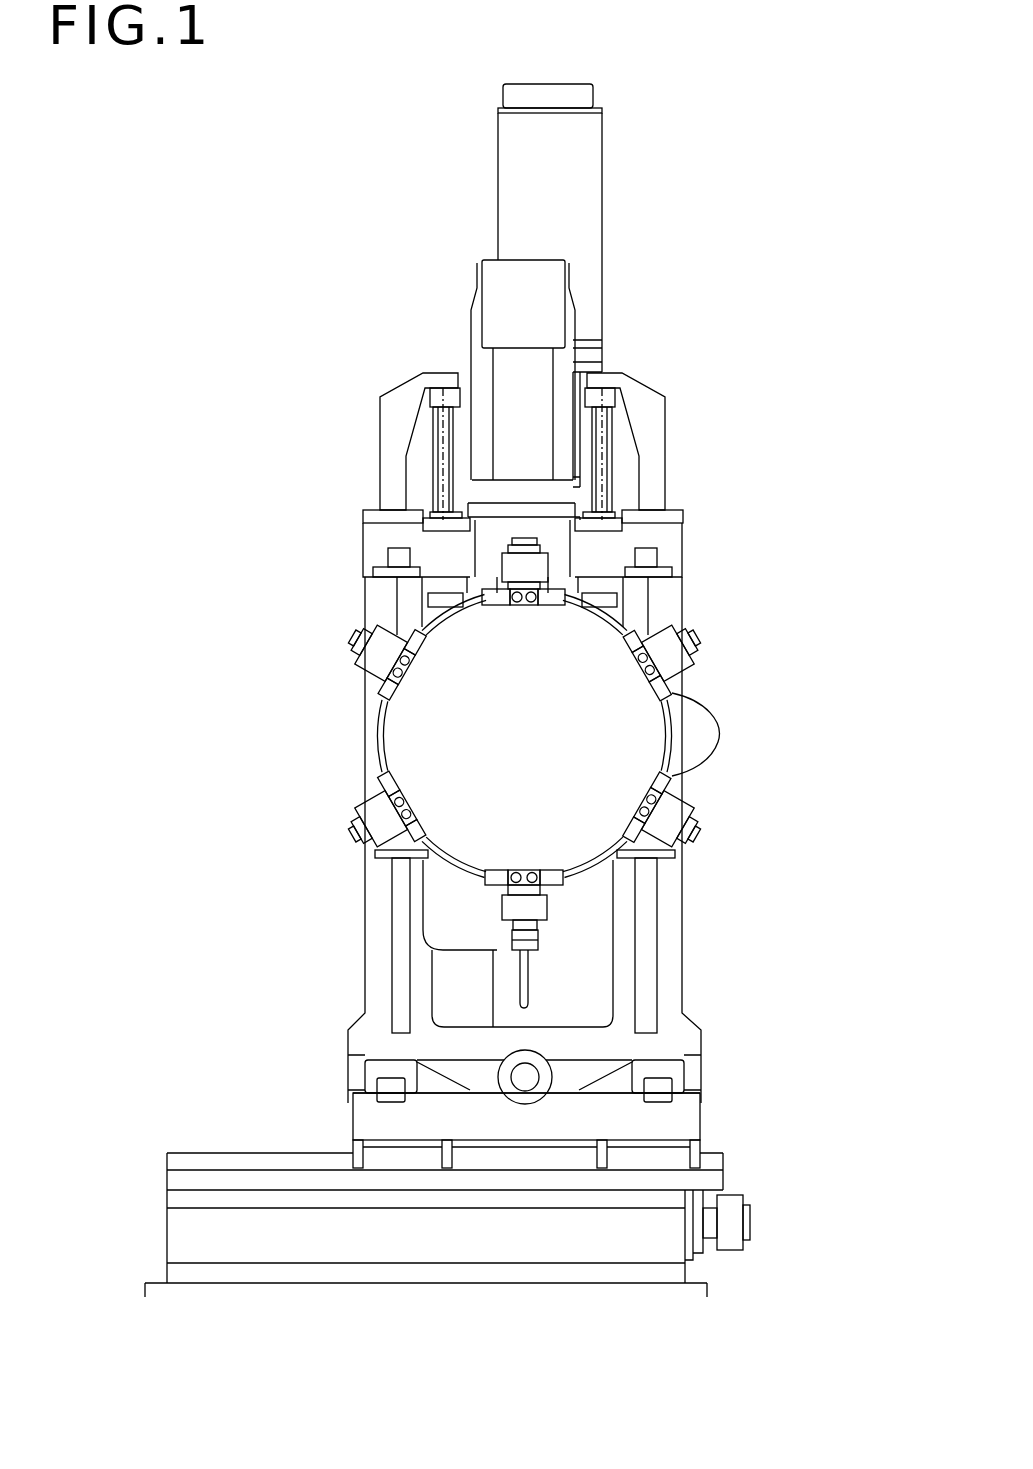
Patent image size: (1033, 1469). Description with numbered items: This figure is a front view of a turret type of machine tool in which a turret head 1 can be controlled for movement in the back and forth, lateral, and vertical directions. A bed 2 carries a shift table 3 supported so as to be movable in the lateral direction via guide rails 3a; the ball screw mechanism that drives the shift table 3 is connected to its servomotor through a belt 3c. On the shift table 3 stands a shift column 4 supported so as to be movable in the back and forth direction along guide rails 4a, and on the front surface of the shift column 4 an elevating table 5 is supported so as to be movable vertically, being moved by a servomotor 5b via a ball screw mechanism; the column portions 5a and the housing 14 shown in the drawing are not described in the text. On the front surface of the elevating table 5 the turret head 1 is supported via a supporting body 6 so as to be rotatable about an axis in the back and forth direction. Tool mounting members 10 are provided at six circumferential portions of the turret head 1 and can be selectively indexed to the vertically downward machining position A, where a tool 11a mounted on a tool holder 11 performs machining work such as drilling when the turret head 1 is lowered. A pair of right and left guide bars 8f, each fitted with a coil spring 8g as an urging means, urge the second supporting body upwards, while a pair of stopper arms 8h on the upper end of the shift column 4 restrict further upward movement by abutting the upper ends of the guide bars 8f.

The turret head 1 is at (425, 740).
The bed 2 is at (183, 1228).
The shift table 3 is at (685, 1117).
The guide rails 3a is at (255, 1155).
The belt 3c is at (738, 1200).
The shift column 4 is at (680, 1003).
The guide rails 4a is at (378, 1085).
The elevating table 5 is at (380, 615).
The columns 5a is at (400, 945).
The servomotor 5b is at (508, 170).
The supporting body 6 is at (722, 727).
The guide bars 8f is at (447, 478).
The coil spring 8g is at (432, 452).
The stopper arms 8h is at (388, 407).
The tool mounting members 10 is at (387, 681).
The tool holder 11 is at (372, 835).
The tool 11a is at (526, 1003).
The housing 14 is at (478, 330).
The machining position A is at (553, 890).